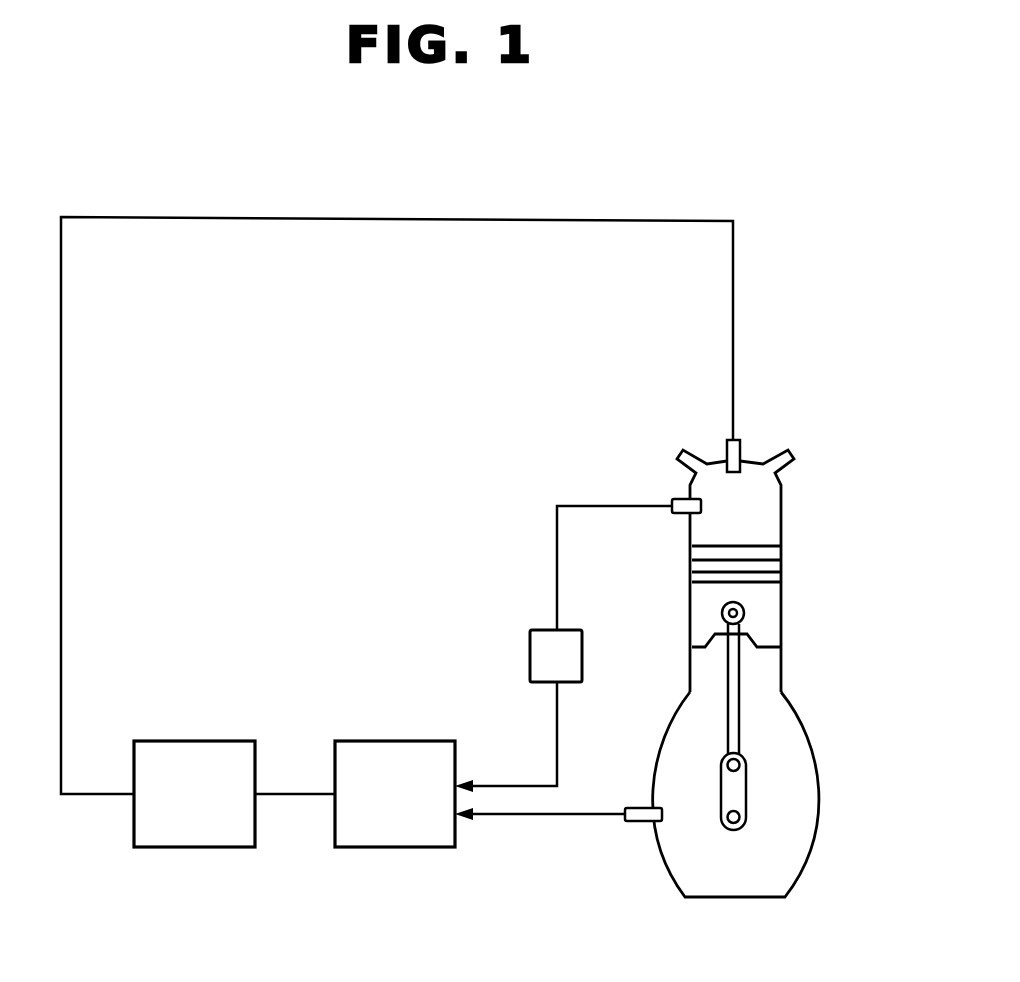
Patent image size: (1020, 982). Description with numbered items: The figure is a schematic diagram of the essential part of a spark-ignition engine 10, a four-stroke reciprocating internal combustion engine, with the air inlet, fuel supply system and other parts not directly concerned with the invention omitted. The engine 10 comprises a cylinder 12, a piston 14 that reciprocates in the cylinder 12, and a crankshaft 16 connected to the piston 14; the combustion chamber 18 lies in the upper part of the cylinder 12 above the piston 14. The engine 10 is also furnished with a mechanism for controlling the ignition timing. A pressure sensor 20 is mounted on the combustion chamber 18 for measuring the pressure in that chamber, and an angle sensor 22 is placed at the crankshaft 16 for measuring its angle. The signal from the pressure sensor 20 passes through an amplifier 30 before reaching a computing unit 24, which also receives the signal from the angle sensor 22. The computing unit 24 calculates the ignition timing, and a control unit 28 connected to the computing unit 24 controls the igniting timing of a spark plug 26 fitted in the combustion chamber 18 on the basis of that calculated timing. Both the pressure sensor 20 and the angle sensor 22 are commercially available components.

The spark-ignition engine 10 is at (768, 268).
The cylinder 12 is at (783, 503).
The piston 14 is at (770, 612).
The crankshaft 16 is at (747, 804).
The combustion chamber 18 is at (758, 527).
The pressure sensor 20 is at (679, 498).
The angle sensor 22 is at (636, 822).
The computing unit 24 is at (425, 848).
The spark plug 26 is at (743, 448).
The control unit 28 is at (218, 848).
The amplifier 30 is at (530, 648).